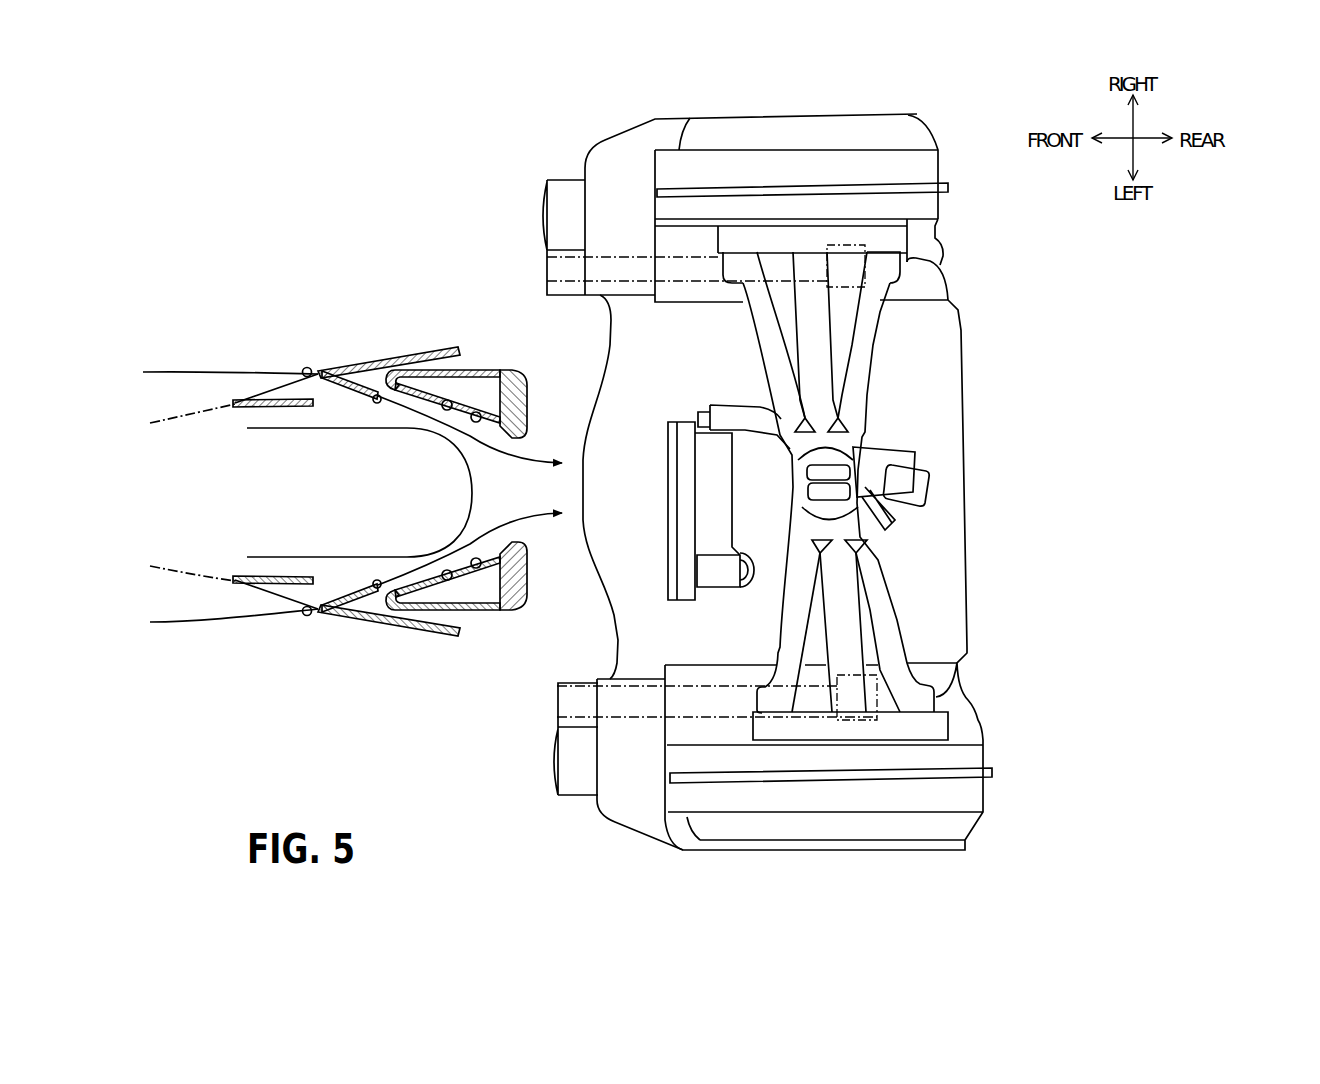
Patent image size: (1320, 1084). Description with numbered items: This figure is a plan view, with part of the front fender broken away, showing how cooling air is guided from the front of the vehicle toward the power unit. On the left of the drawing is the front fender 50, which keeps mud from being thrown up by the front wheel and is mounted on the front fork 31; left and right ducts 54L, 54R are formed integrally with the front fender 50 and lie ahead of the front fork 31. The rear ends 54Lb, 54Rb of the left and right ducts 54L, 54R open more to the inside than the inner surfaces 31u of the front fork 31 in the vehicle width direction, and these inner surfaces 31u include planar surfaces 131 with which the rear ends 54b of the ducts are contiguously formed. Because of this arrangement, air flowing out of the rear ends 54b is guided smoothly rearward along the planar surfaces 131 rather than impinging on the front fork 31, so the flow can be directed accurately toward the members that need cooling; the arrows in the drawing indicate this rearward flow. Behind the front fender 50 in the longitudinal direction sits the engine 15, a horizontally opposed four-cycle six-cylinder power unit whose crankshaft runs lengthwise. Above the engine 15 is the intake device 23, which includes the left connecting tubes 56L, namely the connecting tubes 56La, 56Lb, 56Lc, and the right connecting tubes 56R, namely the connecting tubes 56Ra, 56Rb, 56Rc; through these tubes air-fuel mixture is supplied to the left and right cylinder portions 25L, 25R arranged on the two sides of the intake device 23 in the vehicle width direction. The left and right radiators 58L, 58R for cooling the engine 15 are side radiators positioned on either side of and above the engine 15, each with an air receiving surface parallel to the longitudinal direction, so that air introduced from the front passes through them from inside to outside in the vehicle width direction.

The engine 15 is at (583, 160).
The right radiator 58R is at (633, 257).
The left radiator 58L is at (633, 717).
The right cylinder portion 25R is at (815, 175).
The left cylinder portion 25L is at (825, 798).
The right connecting tubes 56R is at (926, 482).
The connecting tube 56Ra is at (768, 320).
The connecting tube 56Rb is at (813, 340).
The connecting tube 56Rc is at (858, 372).
The left connecting tubes 56L is at (964, 626).
The connecting tube 56La is at (803, 577).
The connecting tube 56Lb is at (840, 603).
The connecting tube 56Lc is at (887, 632).
The intake device 23 is at (925, 456).
The front fender 50 is at (245, 388).
The right duct 54R is at (306, 367).
The left duct 54L is at (308, 616).
The rear end of right duct 54Rb is at (376, 394).
The rear end of left duct 54Lb is at (378, 589).
The rear ends of ducts 54b is at (346, 340).
The front fork 31 is at (517, 371).
The inner surfaces of front fork 31u is at (446, 400).
The planar surfaces 131 is at (476, 412).